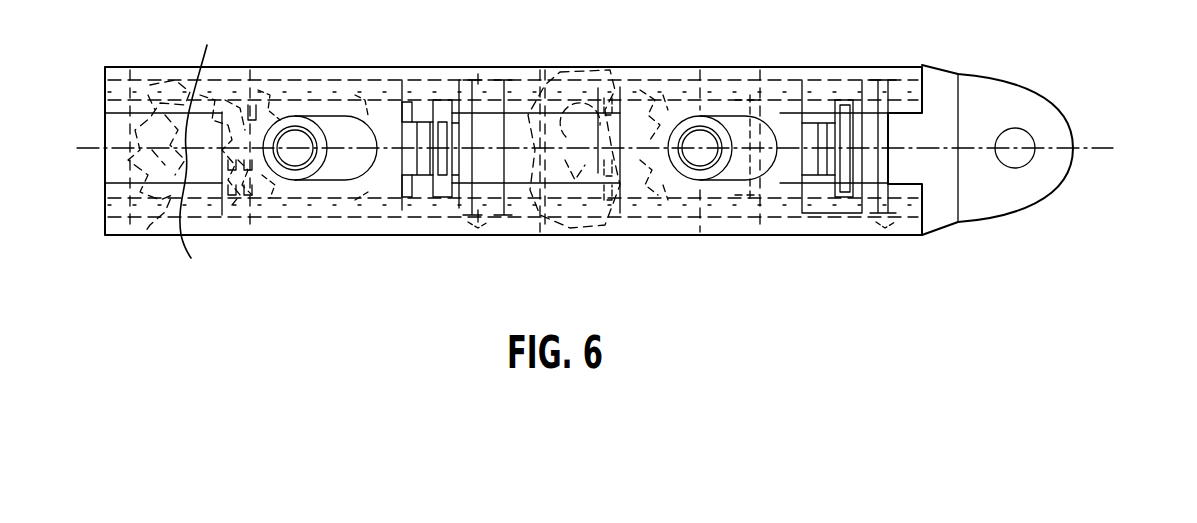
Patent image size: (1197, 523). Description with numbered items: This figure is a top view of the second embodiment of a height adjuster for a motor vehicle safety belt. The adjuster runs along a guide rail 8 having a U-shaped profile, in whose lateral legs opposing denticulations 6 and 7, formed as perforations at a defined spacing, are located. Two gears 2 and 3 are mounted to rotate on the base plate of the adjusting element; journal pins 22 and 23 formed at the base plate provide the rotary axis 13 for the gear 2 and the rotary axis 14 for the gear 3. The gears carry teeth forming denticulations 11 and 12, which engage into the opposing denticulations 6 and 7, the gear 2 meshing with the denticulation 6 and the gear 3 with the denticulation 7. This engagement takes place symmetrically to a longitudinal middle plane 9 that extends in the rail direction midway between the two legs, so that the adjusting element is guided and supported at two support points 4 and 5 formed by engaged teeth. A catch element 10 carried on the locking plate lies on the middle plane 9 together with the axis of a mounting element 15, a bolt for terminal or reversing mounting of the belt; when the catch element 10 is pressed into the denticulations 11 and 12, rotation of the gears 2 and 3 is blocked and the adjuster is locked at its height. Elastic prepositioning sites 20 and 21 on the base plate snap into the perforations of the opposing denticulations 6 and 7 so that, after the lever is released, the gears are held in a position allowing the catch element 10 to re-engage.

The gear 2 is at (158, 62).
The gear 3 is at (133, 238).
The support point 4 is at (590, 235).
The support point 5 is at (598, 66).
The opposing denticulation 6 is at (768, 238).
The opposing denticulation 7 is at (706, 70).
The guide rail 8 is at (388, 227).
The longitudinal middle plane 9 is at (1097, 130).
The catch element 10 is at (262, 140).
The denticulation of gear 2 11 is at (540, 243).
The denticulation of gear 3 12 is at (540, 66).
The rotary axis 13 is at (196, 134).
The rotary axis 14 is at (225, 188).
The mounting element 15 is at (698, 155).
The prepositioning site 20 is at (478, 244).
The prepositioning site 21 is at (477, 66).
The journal pin 22 is at (592, 75).
The journal pin 23 is at (575, 220).